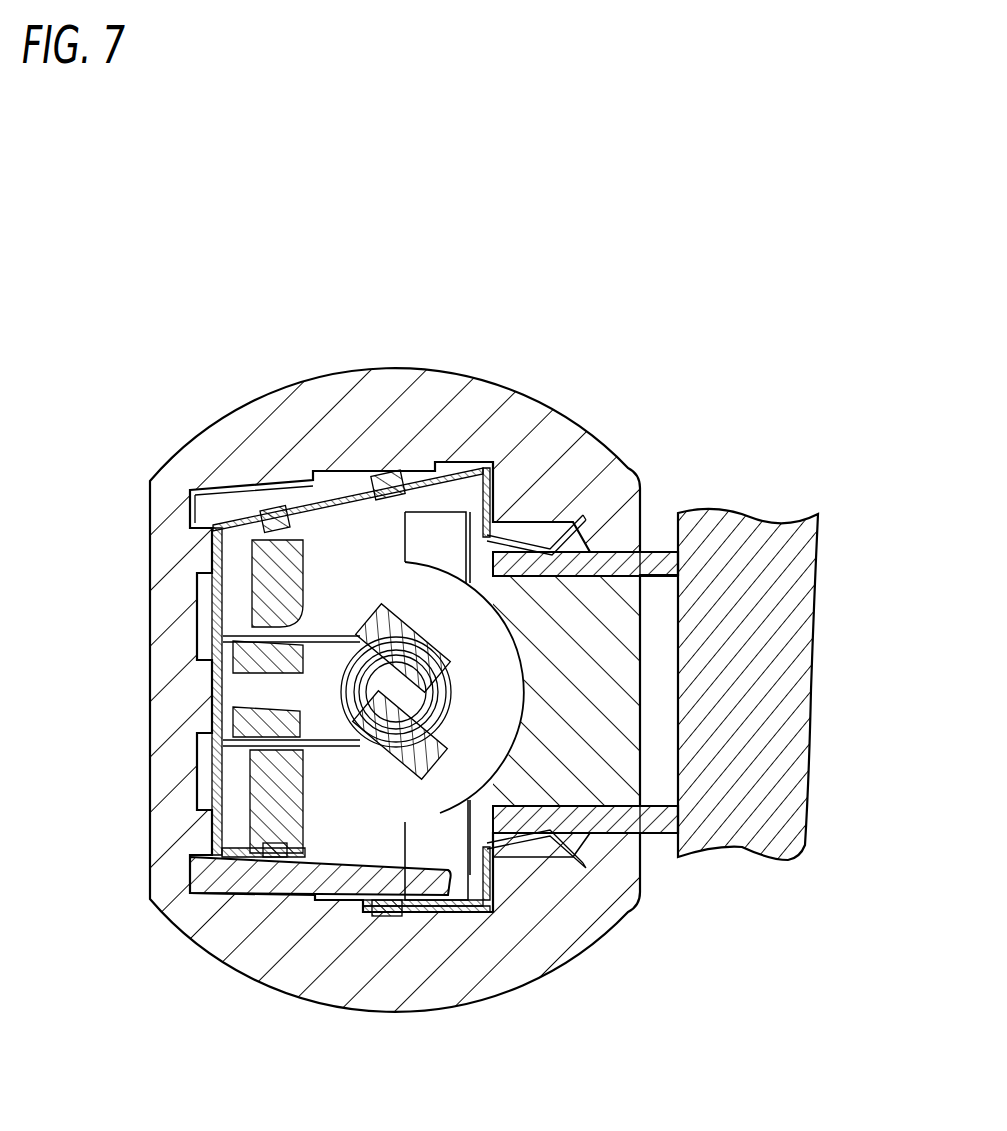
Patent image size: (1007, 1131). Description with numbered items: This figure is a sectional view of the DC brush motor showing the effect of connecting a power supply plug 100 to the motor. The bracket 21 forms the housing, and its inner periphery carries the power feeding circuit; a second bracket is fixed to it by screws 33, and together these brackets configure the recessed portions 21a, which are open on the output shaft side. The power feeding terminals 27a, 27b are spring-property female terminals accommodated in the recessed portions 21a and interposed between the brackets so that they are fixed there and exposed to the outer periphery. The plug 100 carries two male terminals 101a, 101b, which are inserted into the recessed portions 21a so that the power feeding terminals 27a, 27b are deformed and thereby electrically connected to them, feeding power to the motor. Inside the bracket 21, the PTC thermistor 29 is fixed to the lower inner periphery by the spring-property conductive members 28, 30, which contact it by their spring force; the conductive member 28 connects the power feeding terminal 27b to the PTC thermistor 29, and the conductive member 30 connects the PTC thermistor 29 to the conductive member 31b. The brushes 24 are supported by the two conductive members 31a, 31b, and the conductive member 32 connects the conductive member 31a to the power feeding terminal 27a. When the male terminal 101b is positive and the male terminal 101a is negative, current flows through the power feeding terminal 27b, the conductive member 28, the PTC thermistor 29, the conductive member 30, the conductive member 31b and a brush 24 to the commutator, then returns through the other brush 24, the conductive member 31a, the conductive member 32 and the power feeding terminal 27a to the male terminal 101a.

The bracket 21 is at (495, 412).
The recessed portions 21a is at (640, 523).
The brushes 24 is at (368, 760).
The power feeding terminal 27a is at (590, 515).
The power feeding terminal 27b is at (583, 853).
The conductive member 28 is at (415, 910).
The PTC thermistor 29 is at (247, 880).
The conductive member 30 is at (213, 837).
The conductive member 31a is at (265, 638).
The conductive member 31b is at (262, 742).
The conductive member 32 is at (360, 500).
The screws 33 is at (500, 890).
The plug 100 is at (799, 533).
The male terminal 101a is at (605, 583).
The male terminal 101b is at (597, 803).